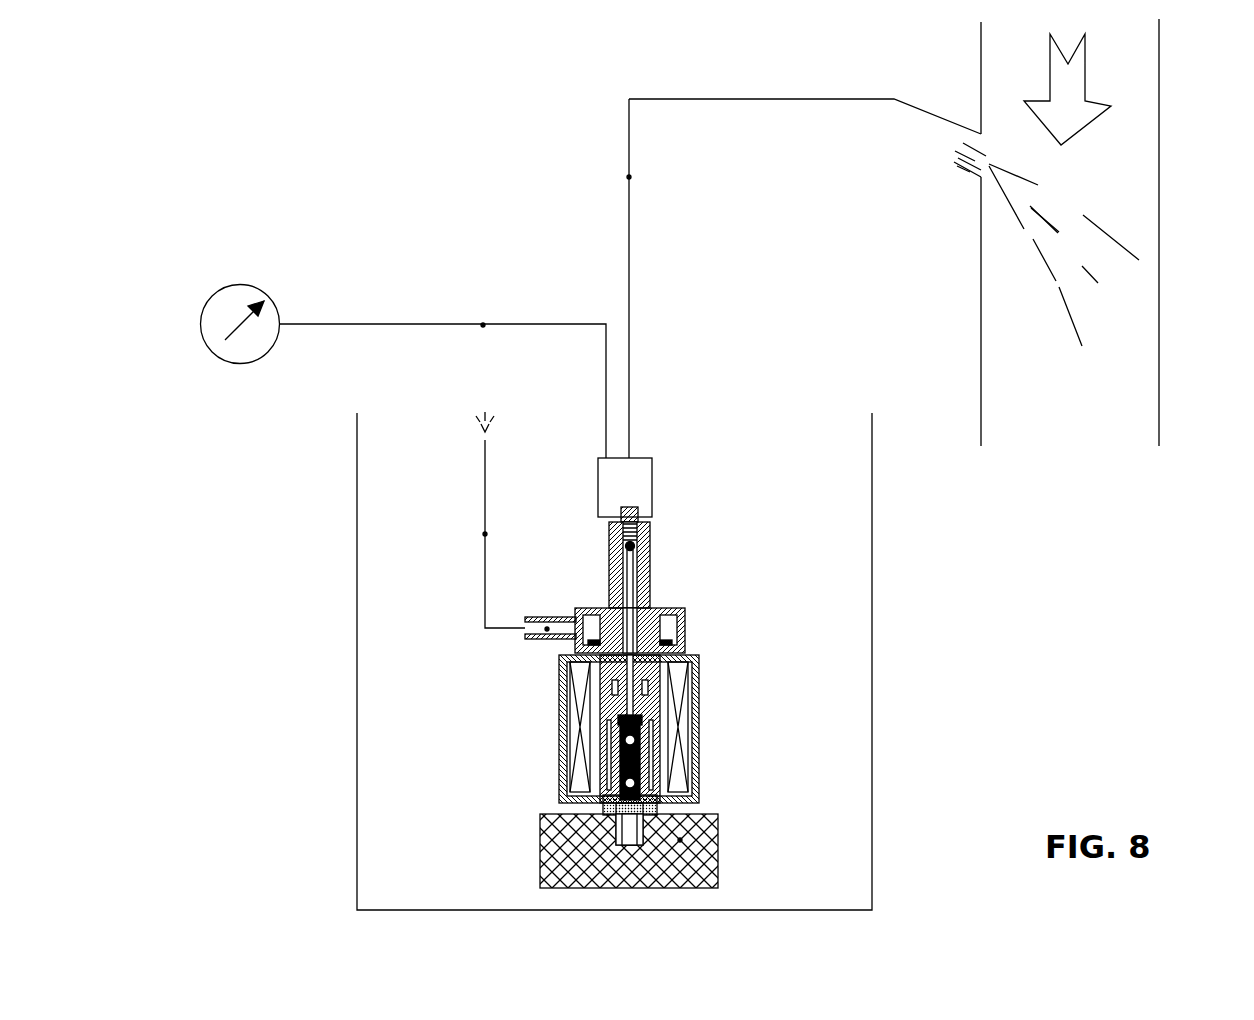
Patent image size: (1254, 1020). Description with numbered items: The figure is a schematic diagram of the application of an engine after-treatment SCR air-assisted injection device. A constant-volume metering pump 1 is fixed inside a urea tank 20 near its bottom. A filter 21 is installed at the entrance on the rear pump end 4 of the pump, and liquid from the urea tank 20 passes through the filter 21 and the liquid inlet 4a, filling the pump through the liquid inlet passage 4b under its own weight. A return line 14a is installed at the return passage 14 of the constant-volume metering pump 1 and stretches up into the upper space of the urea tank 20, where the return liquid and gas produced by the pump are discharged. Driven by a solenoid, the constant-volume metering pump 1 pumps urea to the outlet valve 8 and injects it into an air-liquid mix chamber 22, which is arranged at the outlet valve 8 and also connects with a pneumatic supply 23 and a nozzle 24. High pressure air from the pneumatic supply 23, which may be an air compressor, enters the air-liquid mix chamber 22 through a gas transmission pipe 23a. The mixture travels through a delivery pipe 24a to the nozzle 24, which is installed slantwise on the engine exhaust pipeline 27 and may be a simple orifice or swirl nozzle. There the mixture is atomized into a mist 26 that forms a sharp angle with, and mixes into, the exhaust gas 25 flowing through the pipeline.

The constant-volume metering pump 1 is at (684, 661).
The rear pump end 4 is at (617, 820).
The liquid inlet 4a is at (630, 824).
The liquid inlet passage 4b is at (665, 718).
The outlet valve 8 is at (645, 529).
The return passage 14 is at (547, 629).
The return line 14a is at (485, 534).
The urea tank 20 is at (352, 683).
The filter 21 is at (680, 840).
The air-liquid mix chamber 22 is at (655, 488).
The pneumatic supply 23 is at (200, 309).
The gas transmission pipe 23a is at (483, 325).
The nozzle 24 is at (957, 124).
The delivery pipe 24a is at (629, 177).
The exhaust gas 25 is at (1099, 71).
The mist 26 is at (1094, 218).
The engine exhaust pipeline 27 is at (981, 297).